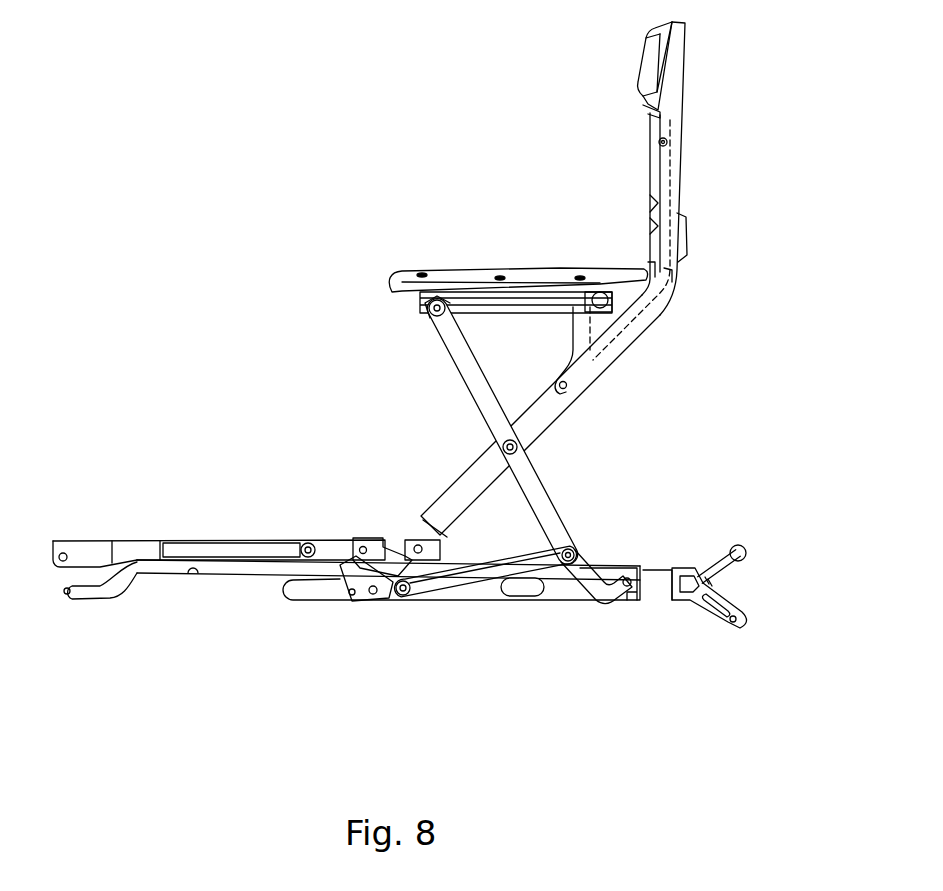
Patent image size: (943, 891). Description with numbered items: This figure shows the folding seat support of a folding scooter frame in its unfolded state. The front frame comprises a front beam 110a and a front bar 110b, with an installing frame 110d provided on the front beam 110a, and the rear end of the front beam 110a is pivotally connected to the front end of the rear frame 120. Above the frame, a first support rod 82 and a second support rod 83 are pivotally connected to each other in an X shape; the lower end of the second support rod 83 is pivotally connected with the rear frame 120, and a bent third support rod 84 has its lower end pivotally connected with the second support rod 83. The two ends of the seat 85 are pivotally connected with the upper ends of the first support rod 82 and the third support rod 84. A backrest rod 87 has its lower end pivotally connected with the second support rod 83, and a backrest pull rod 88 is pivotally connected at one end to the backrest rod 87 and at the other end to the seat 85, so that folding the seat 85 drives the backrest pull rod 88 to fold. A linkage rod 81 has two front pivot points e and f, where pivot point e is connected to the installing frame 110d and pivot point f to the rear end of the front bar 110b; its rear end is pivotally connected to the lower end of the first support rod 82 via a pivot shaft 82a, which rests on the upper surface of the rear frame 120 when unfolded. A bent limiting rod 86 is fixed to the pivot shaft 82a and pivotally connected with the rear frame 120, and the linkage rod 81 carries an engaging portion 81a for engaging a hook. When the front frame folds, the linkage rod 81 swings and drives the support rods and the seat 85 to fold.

The seat 85 is at (516, 308).
The backrest rod 87 is at (680, 172).
The backrest pull rod 88 is at (667, 270).
The third support rod 84 is at (585, 325).
The first support rod 82 is at (468, 378).
The second support rod 83 is at (565, 410).
The pivot shaft 82a is at (572, 552).
The front beam 110a is at (235, 537).
The installing frame 110d is at (345, 535).
The front bar 110b is at (218, 567).
The pivot point e is at (352, 596).
The pivot point f is at (374, 595).
The engaging portion 81a is at (405, 594).
The linkage rod 81 is at (487, 568).
The rear frame 120 is at (528, 598).
The limiting rod 86 is at (603, 594).